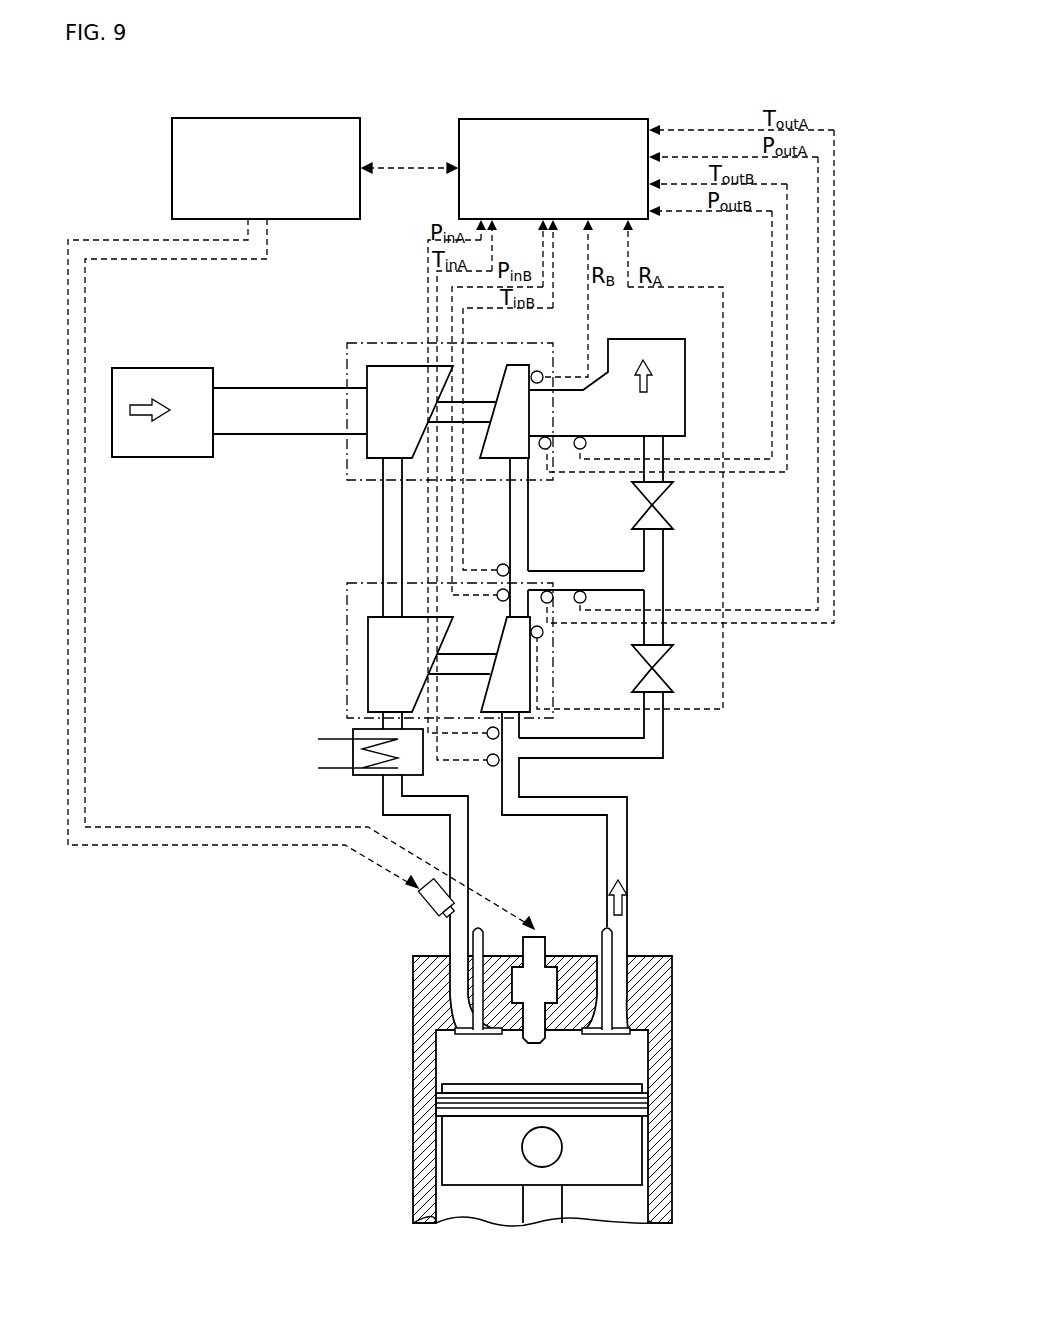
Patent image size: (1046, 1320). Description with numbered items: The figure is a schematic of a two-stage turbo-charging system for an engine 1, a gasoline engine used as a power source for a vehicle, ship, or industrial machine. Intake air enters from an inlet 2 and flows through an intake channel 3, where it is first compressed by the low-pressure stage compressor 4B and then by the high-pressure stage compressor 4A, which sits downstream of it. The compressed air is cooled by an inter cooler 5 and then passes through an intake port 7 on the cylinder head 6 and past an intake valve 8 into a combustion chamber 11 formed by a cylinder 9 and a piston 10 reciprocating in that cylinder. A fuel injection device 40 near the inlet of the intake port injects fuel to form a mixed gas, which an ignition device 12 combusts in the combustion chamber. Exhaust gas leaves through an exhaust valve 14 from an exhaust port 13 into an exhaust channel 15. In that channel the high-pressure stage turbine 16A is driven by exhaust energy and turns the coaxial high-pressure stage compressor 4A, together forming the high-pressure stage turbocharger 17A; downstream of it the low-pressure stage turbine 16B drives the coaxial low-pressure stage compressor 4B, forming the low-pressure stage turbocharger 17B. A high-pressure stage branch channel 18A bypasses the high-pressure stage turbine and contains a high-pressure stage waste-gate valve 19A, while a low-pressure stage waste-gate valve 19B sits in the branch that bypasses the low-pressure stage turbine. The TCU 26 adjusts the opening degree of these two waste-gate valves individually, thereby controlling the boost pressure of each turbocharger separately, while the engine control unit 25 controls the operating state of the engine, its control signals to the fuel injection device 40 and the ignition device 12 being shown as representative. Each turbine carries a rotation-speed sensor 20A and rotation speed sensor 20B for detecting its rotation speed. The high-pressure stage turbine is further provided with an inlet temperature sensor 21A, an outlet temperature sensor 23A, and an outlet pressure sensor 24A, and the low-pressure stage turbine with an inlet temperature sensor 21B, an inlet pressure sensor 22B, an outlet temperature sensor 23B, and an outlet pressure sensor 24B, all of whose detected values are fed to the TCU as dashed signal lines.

The engine 1 is at (558, 1057).
The inlet 2 is at (172, 368).
The intake channel 3 is at (276, 436).
The high-pressure stage compressor 4A is at (368, 691).
The low-pressure stage compressor 4B is at (367, 375).
The inter cooler 5 is at (362, 775).
The cylinder head 6 is at (657, 956).
The intake port 7 is at (385, 936).
The intake valve 8 is at (470, 992).
The cylinder 9 is at (672, 1121).
The piston 10 is at (624, 1163).
The combustion chamber 11 is at (598, 1068).
The ignition device 12 is at (547, 940).
The exhaust port 13 is at (662, 885).
The exhaust valve 14 is at (625, 990).
The exhaust channel 15 is at (607, 845).
The high-pressure stage turbine 16A is at (532, 670).
The low-pressure stage turbine 16B is at (512, 365).
The high-pressure stage turbocharger 17A is at (346, 600).
The low-pressure stage turbocharger 17B is at (346, 356).
The high-pressure stage branch channel 18A is at (620, 586).
The high-pressure stage waste-gate valve 19A is at (657, 672).
The low-pressure stage waste-gate valve 19B is at (660, 496).
The rotation-speed sensor 20A is at (543, 636).
The rotation speed sensor 20B is at (544, 370).
The inlet temperature sensor 21A is at (490, 728).
The inlet temperature sensor 21B is at (502, 564).
The inlet pressure sensor 22B is at (502, 600).
The outlet temperature sensor 23A is at (546, 592).
The outlet temperature sensor 23B is at (553, 439).
The outlet pressure sensor 24A is at (580, 593).
The outlet pressure sensor 24B is at (586, 438).
The engine control unit 25 is at (248, 118).
The TCU 26 is at (539, 118).
The fuel injection device 40 is at (427, 909).